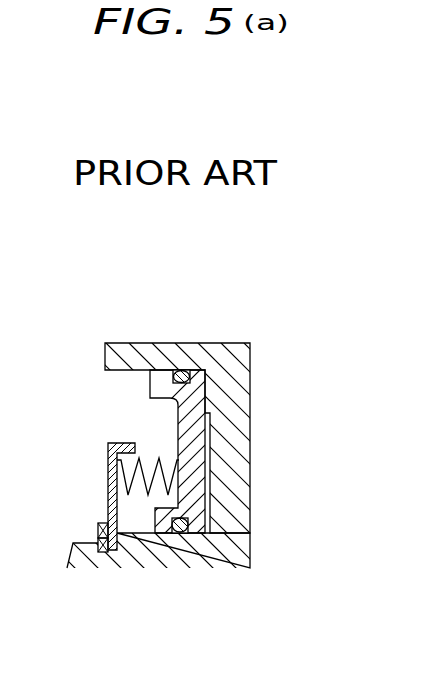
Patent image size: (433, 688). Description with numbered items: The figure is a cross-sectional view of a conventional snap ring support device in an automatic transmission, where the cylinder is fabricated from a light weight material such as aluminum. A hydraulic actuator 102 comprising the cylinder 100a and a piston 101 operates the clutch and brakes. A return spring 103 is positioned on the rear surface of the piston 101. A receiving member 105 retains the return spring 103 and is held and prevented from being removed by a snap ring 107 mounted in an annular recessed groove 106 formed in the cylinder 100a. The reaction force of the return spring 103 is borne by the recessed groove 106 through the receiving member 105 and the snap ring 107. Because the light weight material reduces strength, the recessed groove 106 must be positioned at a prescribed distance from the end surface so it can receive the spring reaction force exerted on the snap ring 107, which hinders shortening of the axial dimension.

The cylinder 100a is at (90, 568).
The piston 101 is at (150, 392).
The hydraulic actuator 102 is at (263, 383).
The return spring 103 is at (150, 458).
The receiving member 105 is at (108, 473).
The annular recessed groove 106 is at (98, 535).
The snap ring 107 is at (98, 526).